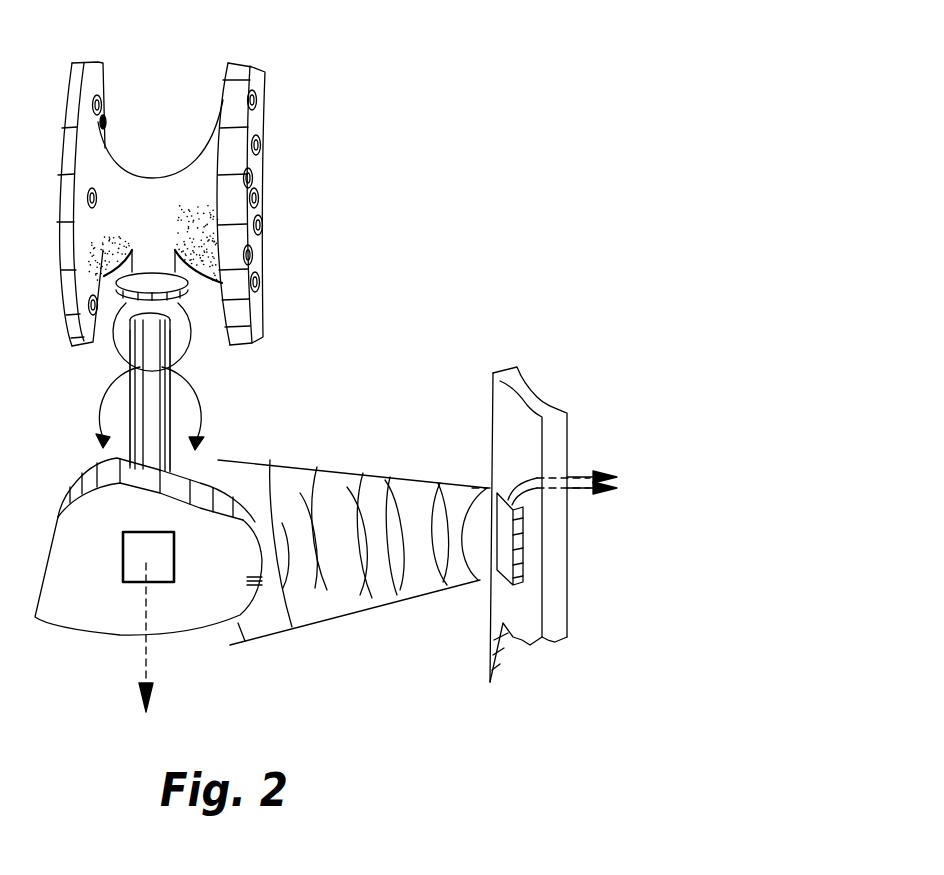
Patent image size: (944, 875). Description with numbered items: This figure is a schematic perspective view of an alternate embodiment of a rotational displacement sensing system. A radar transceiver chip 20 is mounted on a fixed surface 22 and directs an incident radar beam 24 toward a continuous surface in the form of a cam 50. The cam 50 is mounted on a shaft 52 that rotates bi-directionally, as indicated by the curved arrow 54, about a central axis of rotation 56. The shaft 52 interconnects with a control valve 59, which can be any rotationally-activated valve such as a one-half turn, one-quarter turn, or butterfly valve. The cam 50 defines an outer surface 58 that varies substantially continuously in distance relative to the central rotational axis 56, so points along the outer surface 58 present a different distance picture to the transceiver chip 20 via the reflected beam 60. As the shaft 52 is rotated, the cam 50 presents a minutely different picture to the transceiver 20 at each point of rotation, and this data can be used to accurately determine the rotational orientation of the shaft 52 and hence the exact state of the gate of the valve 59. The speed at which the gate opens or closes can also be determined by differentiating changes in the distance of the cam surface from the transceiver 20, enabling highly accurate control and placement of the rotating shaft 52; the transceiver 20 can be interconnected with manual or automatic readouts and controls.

The radar transceiver chip 20 is at (527, 580).
The fixed surface 22 is at (552, 613).
The incident radar beam 24 is at (420, 585).
The cam 50 is at (56, 616).
The shaft 52 is at (176, 470).
The curved arrow 54 is at (198, 402).
The central axis of rotation 56 is at (144, 660).
The outer surface 58 is at (247, 515).
The control valve 59 is at (160, 155).
The reflected beam 60 is at (335, 588).